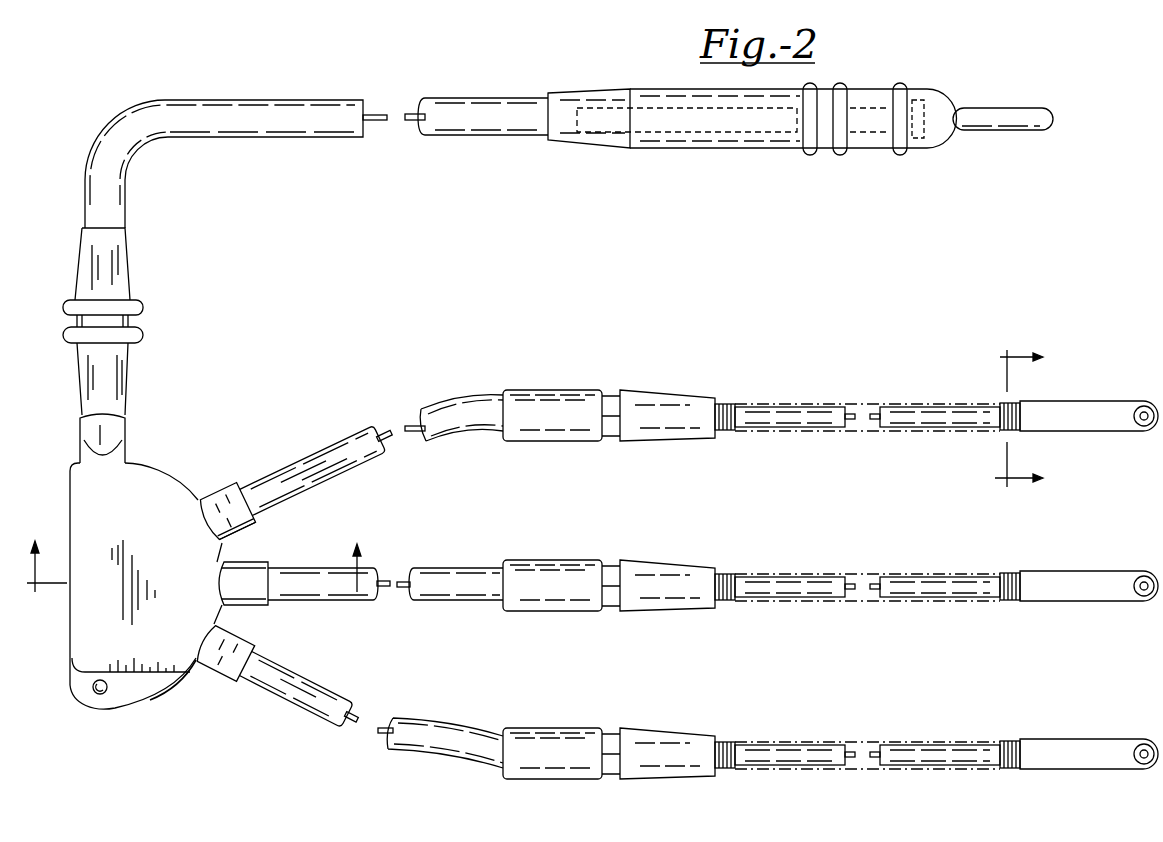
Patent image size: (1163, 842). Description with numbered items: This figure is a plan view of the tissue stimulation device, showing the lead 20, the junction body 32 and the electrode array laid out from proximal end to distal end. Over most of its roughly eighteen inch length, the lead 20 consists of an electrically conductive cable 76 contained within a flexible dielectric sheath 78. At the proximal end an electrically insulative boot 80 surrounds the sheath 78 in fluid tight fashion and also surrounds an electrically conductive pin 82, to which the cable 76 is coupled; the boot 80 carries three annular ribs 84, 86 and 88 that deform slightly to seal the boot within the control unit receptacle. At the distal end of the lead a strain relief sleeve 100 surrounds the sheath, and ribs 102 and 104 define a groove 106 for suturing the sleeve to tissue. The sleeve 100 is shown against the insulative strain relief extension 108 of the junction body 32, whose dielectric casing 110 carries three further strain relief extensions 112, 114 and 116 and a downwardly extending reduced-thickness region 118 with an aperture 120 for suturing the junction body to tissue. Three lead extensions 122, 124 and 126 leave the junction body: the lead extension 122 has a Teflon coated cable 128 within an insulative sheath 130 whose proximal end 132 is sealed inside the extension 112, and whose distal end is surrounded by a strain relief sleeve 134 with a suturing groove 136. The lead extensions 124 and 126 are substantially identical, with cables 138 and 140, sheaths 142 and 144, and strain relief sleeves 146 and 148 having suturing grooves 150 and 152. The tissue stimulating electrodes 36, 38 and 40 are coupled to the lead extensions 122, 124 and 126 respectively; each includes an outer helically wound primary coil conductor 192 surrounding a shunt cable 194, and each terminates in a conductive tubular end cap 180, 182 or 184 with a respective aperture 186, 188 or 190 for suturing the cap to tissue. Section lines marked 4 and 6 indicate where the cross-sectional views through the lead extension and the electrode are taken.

The lead 20 is at (228, 142).
The junction body 32 is at (135, 713).
The tissue stimulating electrode 36 is at (822, 398).
The tissue stimulating electrode 38 is at (832, 568).
The tissue stimulating electrode 40 is at (832, 738).
The electrically conductive cable 76 is at (385, 104).
The dielectric sheath 78 is at (160, 101).
The electrically insulative boot 80 is at (670, 145).
The electrically conductive pin 82 is at (997, 131).
The annular rib 84 is at (805, 158).
The annular rib 86 is at (840, 156).
The annular rib 88 is at (902, 156).
The strain relief sleeve 100 is at (132, 250).
The rib 102 is at (142, 300).
The rib 104 is at (138, 346).
The groove 106 is at (143, 320).
The strain relief extension 108 is at (126, 437).
The dielectric casing 110 is at (182, 487).
The strain relief extension 112 is at (242, 532).
The strain relief extension 114 is at (250, 607).
The strain relief extension 116 is at (210, 673).
The reduced-thickness region 118 is at (165, 690).
The aperture 120 is at (98, 694).
The lead extension 122 is at (330, 430).
The lead extension 124 is at (450, 565).
The lead extension 126 is at (287, 710).
The Teflon coated cable 128 is at (417, 432).
The electrically insulative sheath 130 is at (435, 408).
The proximal end 132 is at (252, 478).
The strain relief sleeve 134 is at (528, 392).
The groove 136 is at (610, 393).
The cable 138 is at (395, 588).
The cable 140 is at (378, 737).
The sheath 142 is at (388, 576).
The sheath 144 is at (445, 766).
The strain relief sleeve 146 is at (527, 560).
The strain relief sleeve 148 is at (670, 729).
The suturing groove 150 is at (610, 560).
The suturing groove 152 is at (610, 728).
The tubular end cap 180 is at (1072, 402).
The tubular end cap 182 is at (1060, 571).
The tubular end cap 184 is at (1060, 739).
The aperture 186 is at (1143, 426).
The aperture 188 is at (1147, 596).
The aperture 190 is at (1142, 764).
The primary coil conductor 192 is at (730, 405).
The shunt cable 194 is at (852, 407).
The section line 4- 4 is at (195, 553).
The section line 6- 6 is at (1029, 418).